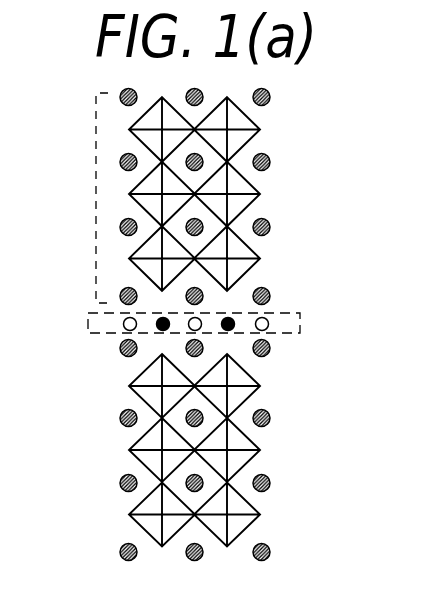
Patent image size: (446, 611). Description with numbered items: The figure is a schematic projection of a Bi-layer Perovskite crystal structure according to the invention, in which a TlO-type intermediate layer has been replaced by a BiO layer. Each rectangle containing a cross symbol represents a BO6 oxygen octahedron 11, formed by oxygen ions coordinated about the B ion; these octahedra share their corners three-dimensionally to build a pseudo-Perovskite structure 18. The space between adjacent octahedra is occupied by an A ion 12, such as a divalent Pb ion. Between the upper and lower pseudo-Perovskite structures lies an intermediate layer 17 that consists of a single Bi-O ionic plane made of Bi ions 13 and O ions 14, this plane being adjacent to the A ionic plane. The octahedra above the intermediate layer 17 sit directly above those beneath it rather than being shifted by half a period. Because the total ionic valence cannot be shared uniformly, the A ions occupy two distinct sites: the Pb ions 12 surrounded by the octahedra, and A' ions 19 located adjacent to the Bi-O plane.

The BO6 oxygen octahedron 11 is at (262, 130).
The A ion 12 is at (266, 221).
The Bi ion 13 is at (232, 330).
The O ion 14 is at (270, 313).
The intermediate layer 17 is at (296, 333).
The pseudo-Perovskite structure 18 is at (96, 187).
The A' ion 19 is at (267, 320).